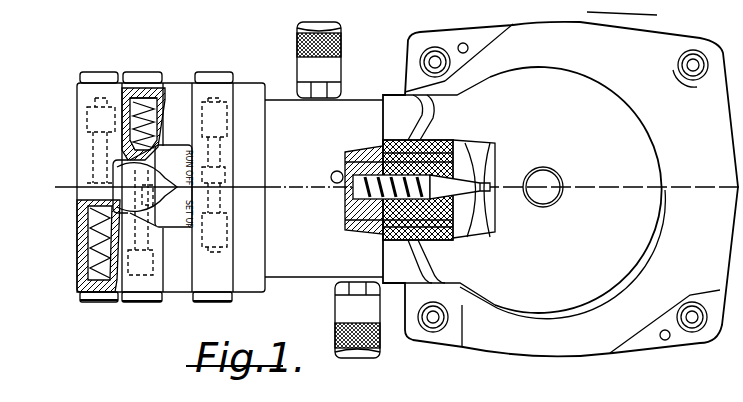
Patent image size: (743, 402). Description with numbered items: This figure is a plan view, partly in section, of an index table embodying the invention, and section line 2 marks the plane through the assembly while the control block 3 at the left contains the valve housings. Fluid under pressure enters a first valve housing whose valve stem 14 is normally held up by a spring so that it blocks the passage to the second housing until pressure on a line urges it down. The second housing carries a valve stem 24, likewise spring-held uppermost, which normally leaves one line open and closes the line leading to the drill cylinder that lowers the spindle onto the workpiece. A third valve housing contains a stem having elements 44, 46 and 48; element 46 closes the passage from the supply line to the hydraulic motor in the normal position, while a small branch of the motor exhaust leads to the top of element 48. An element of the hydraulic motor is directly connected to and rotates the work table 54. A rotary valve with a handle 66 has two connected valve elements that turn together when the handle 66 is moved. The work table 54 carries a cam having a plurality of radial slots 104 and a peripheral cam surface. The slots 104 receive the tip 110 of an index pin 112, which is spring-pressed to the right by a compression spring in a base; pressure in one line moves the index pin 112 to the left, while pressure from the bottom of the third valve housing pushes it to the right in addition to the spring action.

The section line 2- 2 is at (61, 199).
The control block 3 is at (70, 106).
The valve stem 14 is at (80, 235).
The valve stem 24 is at (160, 100).
The valve stem element 44 is at (227, 125).
The valve stem element 46 is at (226, 181).
The valve stem element 48 is at (226, 229).
The work table 54 is at (553, 302).
The handle 66 is at (85, 180).
The radial slots 104 is at (491, 185).
The tip 110 is at (478, 220).
The index pin 112 is at (442, 207).